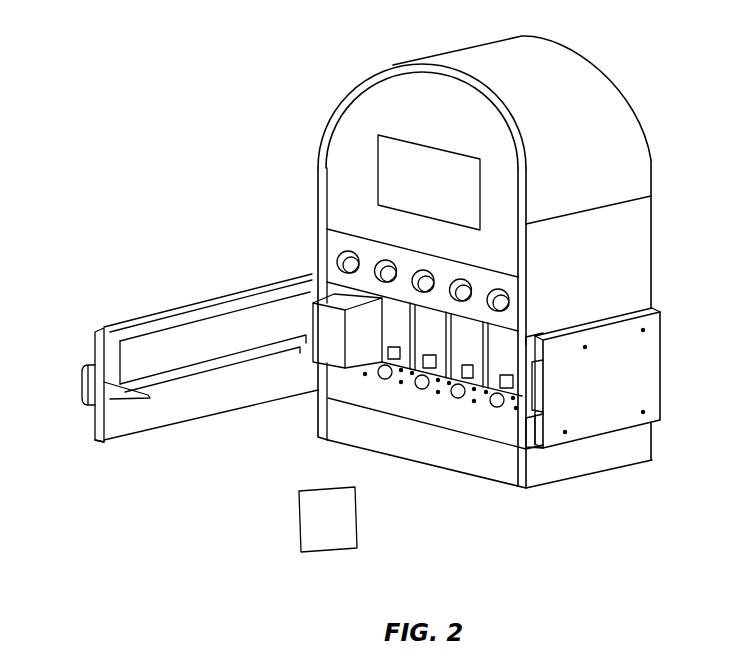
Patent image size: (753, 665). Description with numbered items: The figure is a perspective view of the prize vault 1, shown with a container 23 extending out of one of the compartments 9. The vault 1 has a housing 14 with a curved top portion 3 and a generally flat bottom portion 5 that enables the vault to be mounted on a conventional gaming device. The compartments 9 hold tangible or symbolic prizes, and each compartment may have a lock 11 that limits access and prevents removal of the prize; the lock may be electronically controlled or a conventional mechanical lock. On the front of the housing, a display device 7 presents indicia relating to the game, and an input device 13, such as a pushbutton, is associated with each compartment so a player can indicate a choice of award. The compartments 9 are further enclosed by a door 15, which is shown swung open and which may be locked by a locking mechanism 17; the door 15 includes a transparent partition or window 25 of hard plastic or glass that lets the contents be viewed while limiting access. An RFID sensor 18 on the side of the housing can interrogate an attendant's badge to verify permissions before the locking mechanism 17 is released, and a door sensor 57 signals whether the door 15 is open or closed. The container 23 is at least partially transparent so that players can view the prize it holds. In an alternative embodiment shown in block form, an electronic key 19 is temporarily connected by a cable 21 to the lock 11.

The vault 1 is at (614, 70).
The curved top portion 3 is at (636, 165).
The flat bottom portion 5 is at (600, 460).
The display device 7 is at (389, 177).
The compartments 9 is at (467, 330).
The lock 11 is at (507, 375).
The input device 13 is at (382, 258).
The housing 14 is at (652, 246).
The door 15 is at (187, 313).
The locking mechanism 17 is at (80, 392).
The RFID sensor 18 is at (650, 368).
The electronic key 19 is at (330, 549).
The cable 21 is at (328, 490).
The container 23 is at (332, 318).
The transparent partition or window 25 is at (245, 328).
The door sensor 57 is at (532, 433).